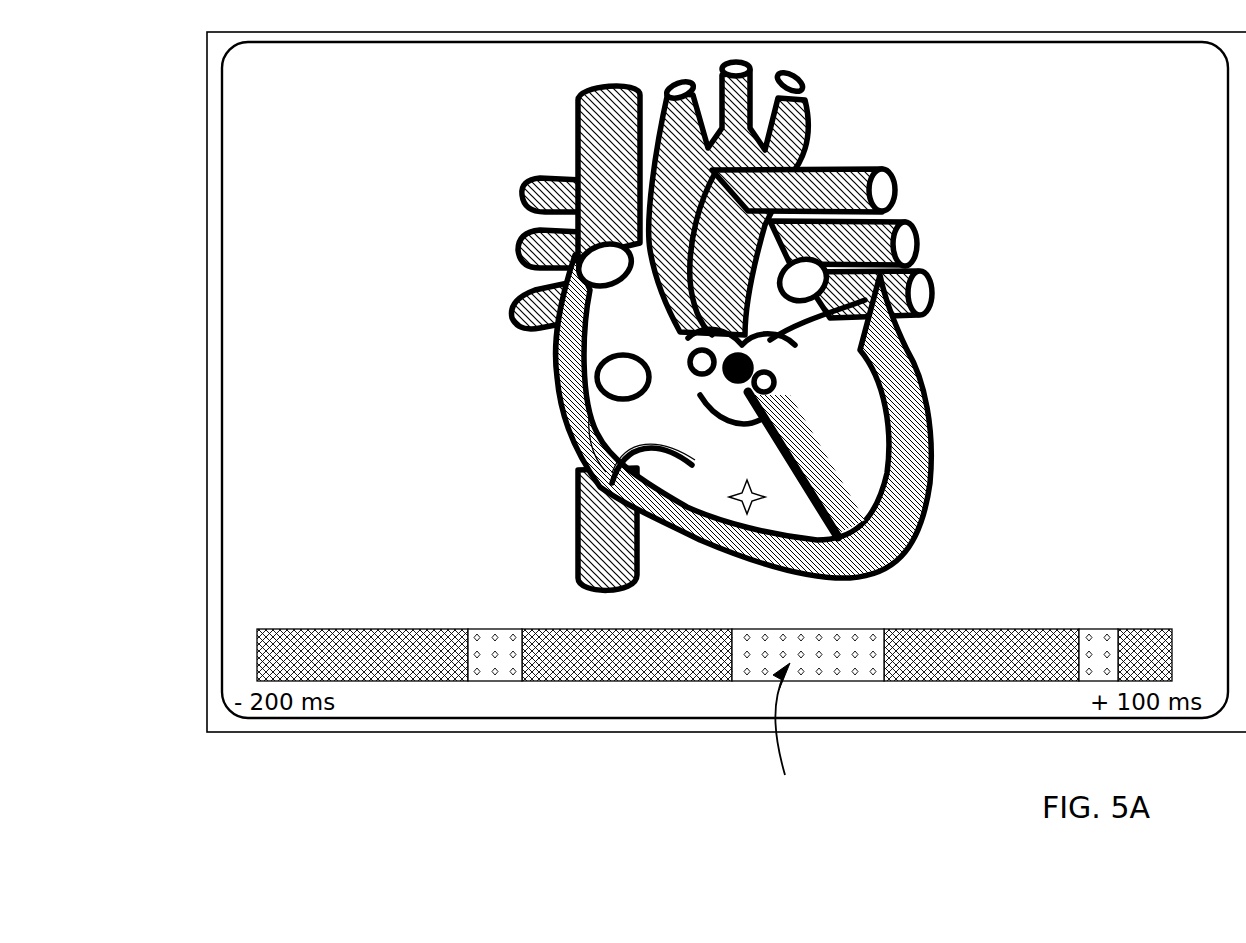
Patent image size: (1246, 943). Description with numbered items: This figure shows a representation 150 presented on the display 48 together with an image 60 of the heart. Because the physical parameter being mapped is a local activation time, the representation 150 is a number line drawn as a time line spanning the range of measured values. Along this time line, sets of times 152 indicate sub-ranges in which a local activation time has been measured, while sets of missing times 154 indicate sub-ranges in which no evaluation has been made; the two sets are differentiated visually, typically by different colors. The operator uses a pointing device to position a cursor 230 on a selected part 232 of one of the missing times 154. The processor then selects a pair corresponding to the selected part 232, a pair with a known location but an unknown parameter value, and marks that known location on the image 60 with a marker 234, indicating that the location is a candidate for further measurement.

The display 48 is at (222, 298).
The image of the heart 60 is at (553, 398).
The representation 150 is at (723, 591).
The sets of times 152 is at (366, 630).
The missing times 154 is at (787, 657).
The cursor 230 is at (799, 732).
The selected part 232 is at (787, 657).
The marker 234 is at (742, 507).